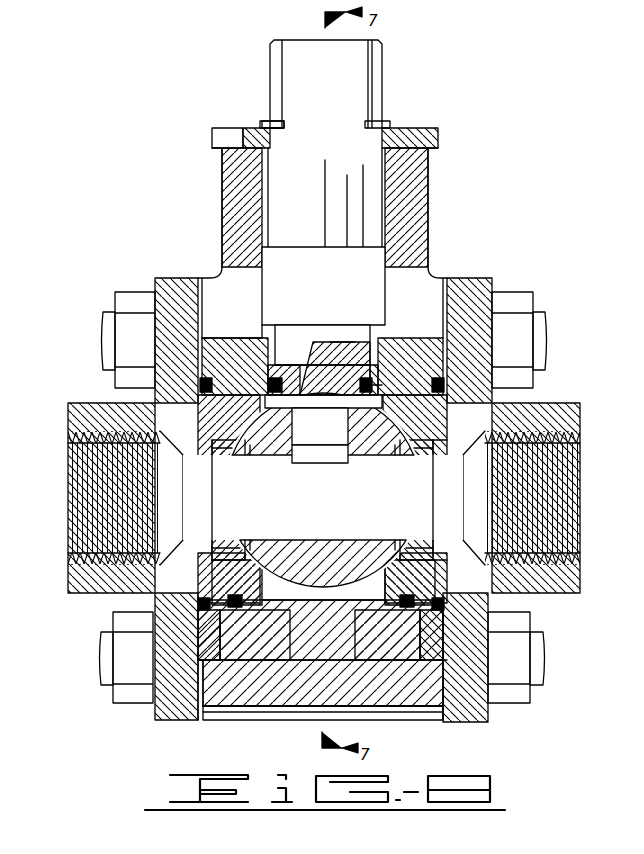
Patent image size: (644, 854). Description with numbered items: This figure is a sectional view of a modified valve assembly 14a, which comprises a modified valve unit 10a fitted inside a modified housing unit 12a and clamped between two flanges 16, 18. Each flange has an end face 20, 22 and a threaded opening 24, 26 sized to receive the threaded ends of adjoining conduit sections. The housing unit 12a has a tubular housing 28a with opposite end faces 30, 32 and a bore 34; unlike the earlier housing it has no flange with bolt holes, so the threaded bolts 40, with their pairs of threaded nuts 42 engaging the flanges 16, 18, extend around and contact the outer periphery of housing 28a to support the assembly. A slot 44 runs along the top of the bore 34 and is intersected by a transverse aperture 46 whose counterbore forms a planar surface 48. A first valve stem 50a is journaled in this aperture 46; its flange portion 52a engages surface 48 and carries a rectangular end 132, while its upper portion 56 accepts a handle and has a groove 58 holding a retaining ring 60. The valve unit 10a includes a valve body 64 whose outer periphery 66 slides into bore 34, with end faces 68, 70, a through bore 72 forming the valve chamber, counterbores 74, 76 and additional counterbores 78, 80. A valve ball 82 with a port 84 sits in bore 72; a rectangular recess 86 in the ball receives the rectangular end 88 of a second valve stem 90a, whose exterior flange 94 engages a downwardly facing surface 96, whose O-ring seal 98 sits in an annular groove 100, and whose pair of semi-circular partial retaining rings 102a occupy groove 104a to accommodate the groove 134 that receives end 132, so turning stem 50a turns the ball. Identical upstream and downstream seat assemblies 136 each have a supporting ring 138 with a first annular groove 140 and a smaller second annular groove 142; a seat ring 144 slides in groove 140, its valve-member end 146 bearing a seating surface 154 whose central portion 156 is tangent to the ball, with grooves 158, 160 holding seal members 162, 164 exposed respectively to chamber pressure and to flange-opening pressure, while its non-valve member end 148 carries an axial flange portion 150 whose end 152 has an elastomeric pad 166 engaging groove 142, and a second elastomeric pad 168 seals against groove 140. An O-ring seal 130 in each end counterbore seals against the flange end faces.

The modified valve unit 10a is at (465, 345).
The modified housing unit 12a is at (430, 238).
The modified valve assembly 14a is at (445, 200).
The flange 16 is at (180, 718).
The flange 18 is at (476, 722).
The end face 20 is at (208, 720).
The end face 22 is at (440, 724).
The threaded opening 24 is at (95, 546).
The threaded opening 26 is at (575, 546).
The housing 28a is at (412, 170).
The end face 30 is at (200, 285).
The end face 32 is at (456, 318).
The bore 34 is at (262, 668).
The threaded bolts 40 is at (103, 341).
The threaded nuts 42 is at (128, 296).
The slot 44 is at (232, 306).
The aperture 46 is at (268, 190).
The planar surface 48 is at (385, 247).
The first valve stem 50a is at (333, 202).
The flange portion 52a is at (323, 286).
The upper portion 56 is at (368, 62).
The groove 58 is at (284, 124).
The retaining ring 60 is at (262, 122).
The valve body 64 is at (384, 700).
The outer periphery 66 is at (300, 656).
The end face 68 is at (200, 650).
The end face 70 is at (450, 652).
The bore 72 is at (310, 588).
The counterbore 74 is at (238, 612).
The counterbore 76 is at (398, 612).
The additional counterbore 78 is at (206, 626).
The additional counterbore 80 is at (450, 630).
The valve ball 82 is at (288, 552).
The port 84 is at (323, 497).
The rectangular recess 86 is at (300, 452).
The rectangular end 88 is at (323, 420).
The second valve stem 90a is at (383, 355).
The exterior flange 94 is at (262, 388).
The downwardly facing surface 96 is at (384, 395).
The O-ring seal 98 is at (386, 376).
The annular groove 100 is at (335, 368).
The partial retaining rings 102a is at (332, 345).
The groove 104a is at (342, 345).
The O-ring seal 130 is at (204, 606).
The rectangular end 132 is at (322, 345).
The groove 134 is at (270, 350).
The seat assemblies 136 is at (235, 530).
The supporting ring 138 is at (212, 574).
The first annular groove 140 is at (262, 585).
The second annular groove 142 is at (232, 606).
The seat ring 144 is at (411, 582).
The valve-member end 146 is at (376, 590).
The non-valve member end 148 is at (420, 576).
The axial flange portion 150 is at (438, 528).
The non-valve member end 152 is at (445, 522).
The seating surface 154 is at (250, 470).
The central portion 156 is at (262, 446).
The groove 158 is at (232, 432).
The groove 160 is at (242, 396).
The seal member 162 is at (364, 456).
The seal member 164 is at (388, 478).
The elastomeric pad 166 is at (445, 472).
The second elastomeric pad 168 is at (388, 425).